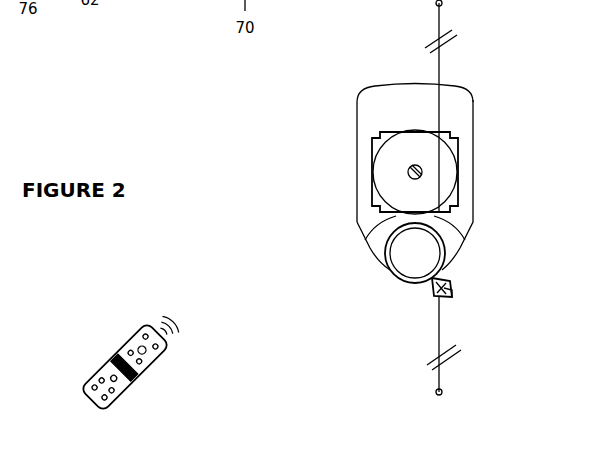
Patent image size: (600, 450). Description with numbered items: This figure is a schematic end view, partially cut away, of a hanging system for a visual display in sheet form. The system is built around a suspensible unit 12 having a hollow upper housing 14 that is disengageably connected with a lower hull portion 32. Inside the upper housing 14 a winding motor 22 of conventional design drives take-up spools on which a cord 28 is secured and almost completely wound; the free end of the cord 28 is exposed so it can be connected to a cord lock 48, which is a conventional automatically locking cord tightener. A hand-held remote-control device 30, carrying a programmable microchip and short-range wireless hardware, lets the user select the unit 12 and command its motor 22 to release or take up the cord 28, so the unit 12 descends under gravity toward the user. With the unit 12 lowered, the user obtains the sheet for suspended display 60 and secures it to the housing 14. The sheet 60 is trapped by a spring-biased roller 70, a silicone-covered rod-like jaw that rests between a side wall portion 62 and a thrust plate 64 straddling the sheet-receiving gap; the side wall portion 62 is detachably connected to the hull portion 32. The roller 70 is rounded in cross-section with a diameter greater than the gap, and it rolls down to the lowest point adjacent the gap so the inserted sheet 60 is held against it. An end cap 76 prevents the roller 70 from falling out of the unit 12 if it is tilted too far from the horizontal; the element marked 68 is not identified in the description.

The suspensible unit 12 is at (353, 172).
The hollow upper housing 14 is at (477, 161).
The winding motor 22 is at (369, 145).
The cord 28 is at (443, 72).
The hand-held remote-control device 30 is at (146, 397).
The hull portion 32 is at (364, 243).
The cord lock 48 is at (444, 3).
The sheet for suspended display 60 is at (433, 340).
The side wall portion 62 is at (432, 291).
The thrust plate 64 is at (455, 294).
The cord guide 68 is at (375, 8).
The roller 70 is at (453, 281).
The end cap 76 is at (386, 268).